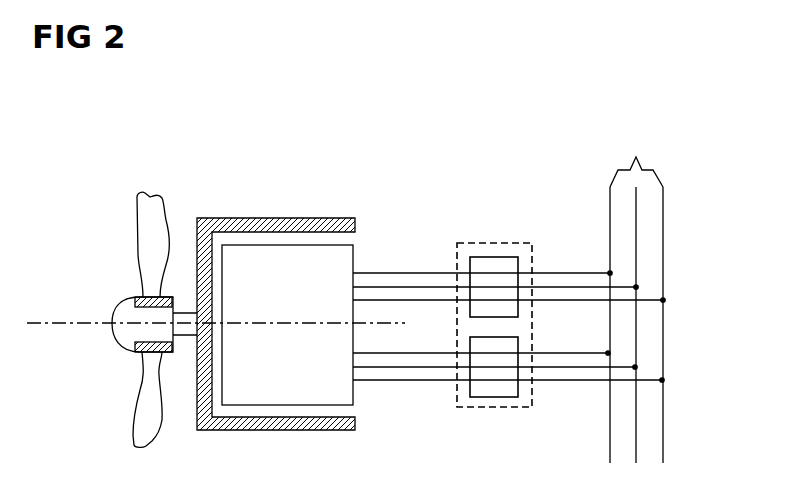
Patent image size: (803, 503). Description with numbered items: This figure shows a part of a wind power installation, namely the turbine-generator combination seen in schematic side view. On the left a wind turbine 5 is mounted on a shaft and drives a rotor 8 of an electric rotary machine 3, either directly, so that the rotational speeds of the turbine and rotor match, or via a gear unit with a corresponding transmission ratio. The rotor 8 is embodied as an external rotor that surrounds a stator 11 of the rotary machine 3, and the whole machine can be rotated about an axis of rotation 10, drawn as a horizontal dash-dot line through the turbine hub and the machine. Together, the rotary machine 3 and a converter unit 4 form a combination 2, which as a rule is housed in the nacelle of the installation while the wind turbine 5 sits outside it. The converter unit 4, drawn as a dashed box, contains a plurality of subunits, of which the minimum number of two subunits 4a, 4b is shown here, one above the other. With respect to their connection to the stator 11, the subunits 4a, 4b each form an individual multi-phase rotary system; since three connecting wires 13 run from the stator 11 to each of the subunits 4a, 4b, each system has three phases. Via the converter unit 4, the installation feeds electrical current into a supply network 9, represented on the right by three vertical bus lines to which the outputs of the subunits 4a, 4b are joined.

The combination 2 is at (548, 92).
The electric rotary machine 3 is at (310, 271).
The converter unit 4 is at (497, 322).
The subunit 4a is at (502, 257).
The subunit 4b is at (497, 407).
The wind turbine 5 is at (147, 225).
The rotor 8 is at (252, 222).
The supply network 9 is at (635, 293).
The axis of rotation 10 is at (36, 322).
The stator 11 is at (297, 262).
The connecting wires 13 is at (402, 300).